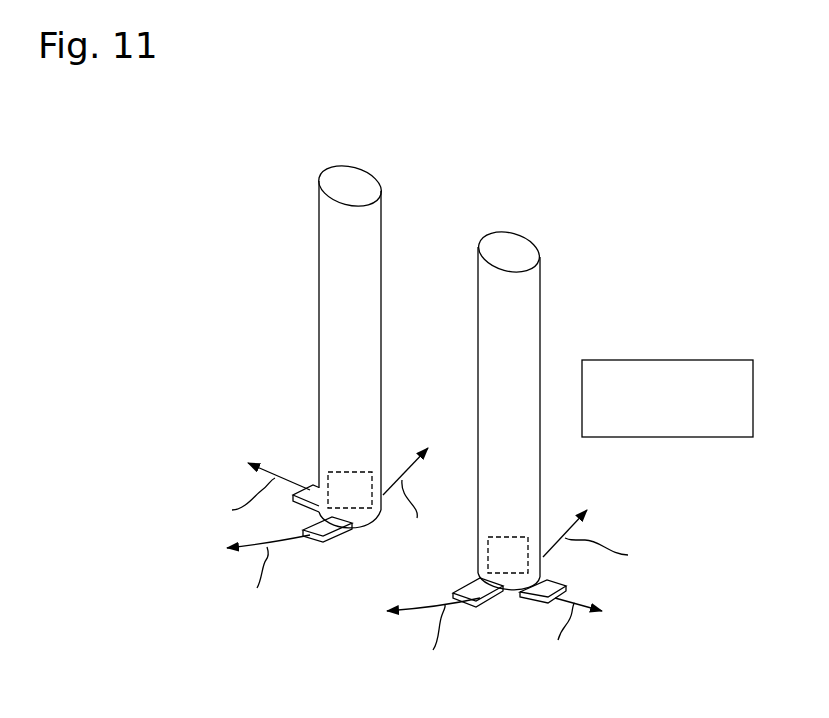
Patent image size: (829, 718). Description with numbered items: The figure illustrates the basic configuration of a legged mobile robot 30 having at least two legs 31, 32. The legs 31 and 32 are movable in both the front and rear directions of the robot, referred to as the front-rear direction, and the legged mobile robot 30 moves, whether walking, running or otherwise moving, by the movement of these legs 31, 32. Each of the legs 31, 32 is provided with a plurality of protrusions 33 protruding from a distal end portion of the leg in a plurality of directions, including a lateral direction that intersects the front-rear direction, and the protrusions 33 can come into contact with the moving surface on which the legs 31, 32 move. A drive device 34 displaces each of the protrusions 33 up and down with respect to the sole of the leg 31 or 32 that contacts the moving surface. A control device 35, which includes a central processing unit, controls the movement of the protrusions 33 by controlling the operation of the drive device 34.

The legged mobile robot 30 is at (577, 172).
The leg 31 is at (319, 223).
The leg 32 is at (540, 310).
The protrusion 33 is at (316, 488).
The drive device 34 is at (357, 472).
The control device 35 is at (697, 360).